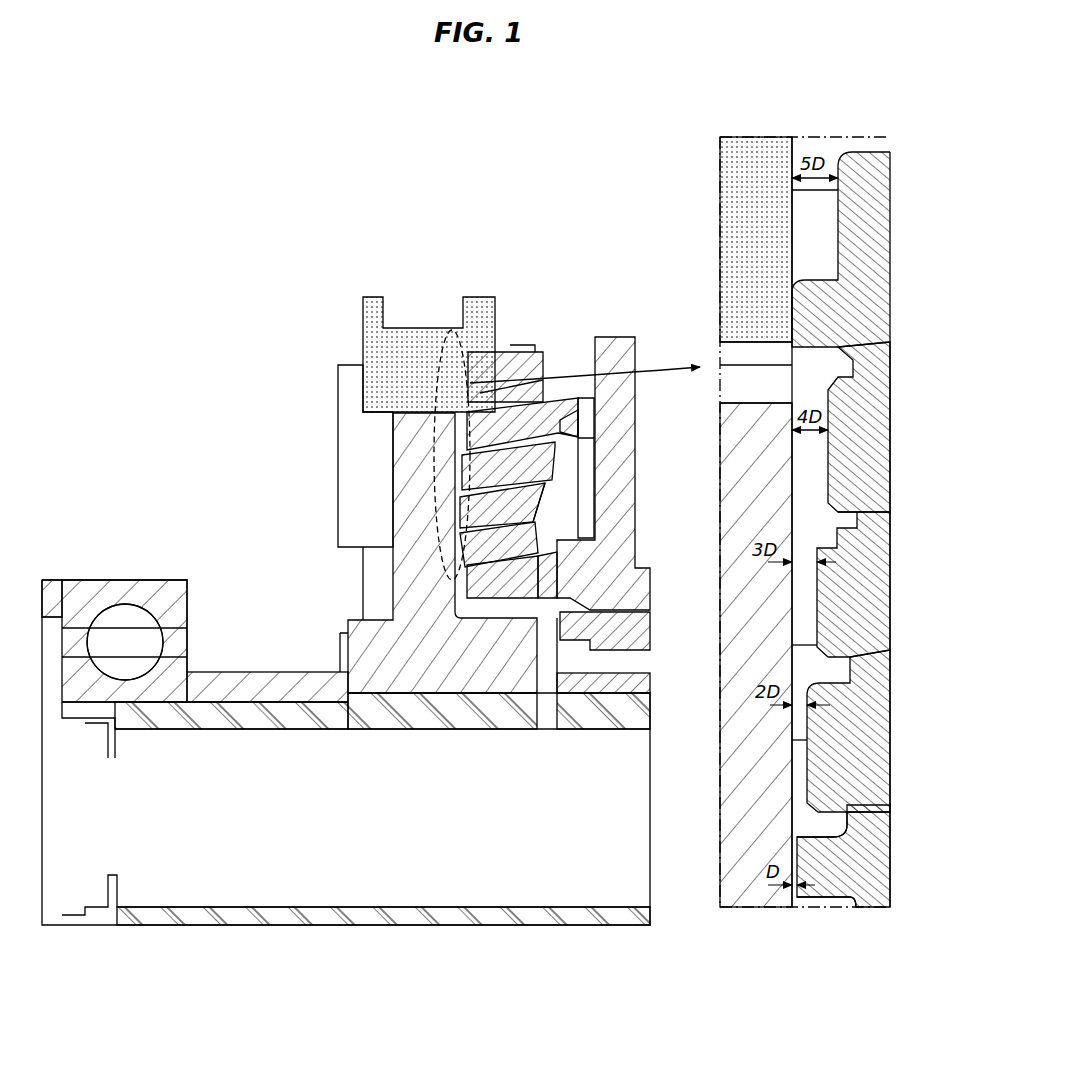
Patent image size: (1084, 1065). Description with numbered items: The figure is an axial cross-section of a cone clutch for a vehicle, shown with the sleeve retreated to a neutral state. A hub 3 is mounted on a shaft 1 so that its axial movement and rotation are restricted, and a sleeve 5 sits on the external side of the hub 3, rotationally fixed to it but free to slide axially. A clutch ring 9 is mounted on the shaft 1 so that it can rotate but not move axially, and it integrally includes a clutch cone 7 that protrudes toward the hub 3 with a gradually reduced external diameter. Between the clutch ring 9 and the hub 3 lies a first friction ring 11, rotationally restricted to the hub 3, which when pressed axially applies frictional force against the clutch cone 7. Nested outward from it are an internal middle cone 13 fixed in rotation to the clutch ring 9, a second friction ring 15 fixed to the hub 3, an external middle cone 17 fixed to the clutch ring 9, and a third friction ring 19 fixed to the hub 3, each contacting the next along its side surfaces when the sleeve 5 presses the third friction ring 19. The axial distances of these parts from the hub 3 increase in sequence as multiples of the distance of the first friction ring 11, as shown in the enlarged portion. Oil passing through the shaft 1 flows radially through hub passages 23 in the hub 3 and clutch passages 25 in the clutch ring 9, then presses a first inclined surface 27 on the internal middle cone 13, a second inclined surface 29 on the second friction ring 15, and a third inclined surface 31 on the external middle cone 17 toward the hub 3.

The shaft 1 is at (290, 920).
The hub 3 is at (375, 652).
The sleeve 5 is at (425, 325).
The clutch cone 7 is at (465, 575).
The clutch ring 9 is at (615, 548).
The first friction ring 11 is at (458, 548).
The internal middle cone 13 is at (460, 510).
The second friction ring 15 is at (462, 468).
The external middle cone 17 is at (465, 425).
The third friction ring 19 is at (465, 383).
The hub passages 23 is at (555, 665).
The clutch passages 25 is at (553, 578).
The first inclined surface 27 is at (548, 502).
The second inclined surface 29 is at (575, 468).
The third inclined surface 31 is at (590, 427).